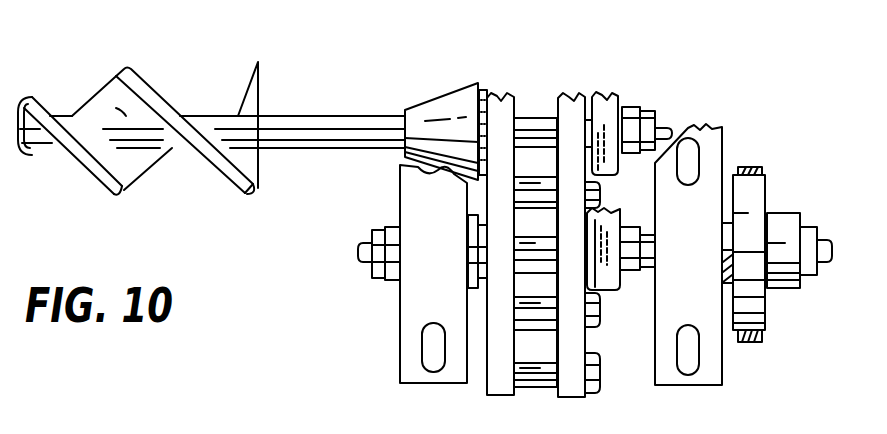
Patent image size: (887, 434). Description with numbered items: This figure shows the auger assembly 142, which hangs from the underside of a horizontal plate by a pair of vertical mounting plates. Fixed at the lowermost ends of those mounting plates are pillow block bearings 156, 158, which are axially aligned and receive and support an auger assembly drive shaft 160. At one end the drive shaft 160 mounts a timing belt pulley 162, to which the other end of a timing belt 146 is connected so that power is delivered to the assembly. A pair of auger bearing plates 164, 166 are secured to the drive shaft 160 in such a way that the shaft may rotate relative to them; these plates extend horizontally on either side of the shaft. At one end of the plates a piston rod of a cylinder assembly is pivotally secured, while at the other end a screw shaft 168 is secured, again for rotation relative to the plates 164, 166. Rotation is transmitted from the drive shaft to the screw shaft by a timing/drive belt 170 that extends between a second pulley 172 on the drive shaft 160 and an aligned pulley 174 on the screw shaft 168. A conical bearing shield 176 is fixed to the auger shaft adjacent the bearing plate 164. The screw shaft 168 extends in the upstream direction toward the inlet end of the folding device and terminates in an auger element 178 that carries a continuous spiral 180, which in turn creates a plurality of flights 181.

The auger assembly 142 is at (263, 352).
The timing belt 146 is at (760, 168).
The pillow block bearing 156 is at (410, 377).
The pillow block bearing 158 is at (722, 130).
The auger assembly drive shaft 160 is at (521, 238).
The timing belt pulley 162 is at (787, 288).
The auger bearing plate 164 is at (500, 385).
The auger bearing plate 166 is at (572, 392).
The screw shaft 168 is at (533, 124).
The timing/drive belt 170 is at (606, 103).
The second pulley 172 is at (626, 292).
The pulley 174 is at (624, 115).
The conical bearing shield 176 is at (425, 112).
The auger element 178 is at (198, 105).
The continuous spiral 180 is at (152, 80).
The flights 181 is at (90, 100).